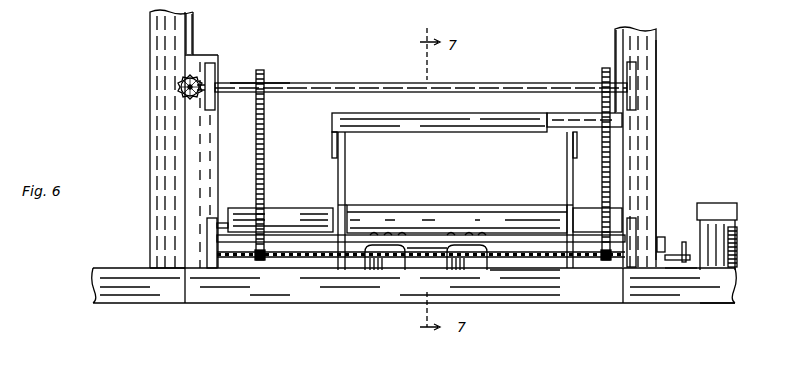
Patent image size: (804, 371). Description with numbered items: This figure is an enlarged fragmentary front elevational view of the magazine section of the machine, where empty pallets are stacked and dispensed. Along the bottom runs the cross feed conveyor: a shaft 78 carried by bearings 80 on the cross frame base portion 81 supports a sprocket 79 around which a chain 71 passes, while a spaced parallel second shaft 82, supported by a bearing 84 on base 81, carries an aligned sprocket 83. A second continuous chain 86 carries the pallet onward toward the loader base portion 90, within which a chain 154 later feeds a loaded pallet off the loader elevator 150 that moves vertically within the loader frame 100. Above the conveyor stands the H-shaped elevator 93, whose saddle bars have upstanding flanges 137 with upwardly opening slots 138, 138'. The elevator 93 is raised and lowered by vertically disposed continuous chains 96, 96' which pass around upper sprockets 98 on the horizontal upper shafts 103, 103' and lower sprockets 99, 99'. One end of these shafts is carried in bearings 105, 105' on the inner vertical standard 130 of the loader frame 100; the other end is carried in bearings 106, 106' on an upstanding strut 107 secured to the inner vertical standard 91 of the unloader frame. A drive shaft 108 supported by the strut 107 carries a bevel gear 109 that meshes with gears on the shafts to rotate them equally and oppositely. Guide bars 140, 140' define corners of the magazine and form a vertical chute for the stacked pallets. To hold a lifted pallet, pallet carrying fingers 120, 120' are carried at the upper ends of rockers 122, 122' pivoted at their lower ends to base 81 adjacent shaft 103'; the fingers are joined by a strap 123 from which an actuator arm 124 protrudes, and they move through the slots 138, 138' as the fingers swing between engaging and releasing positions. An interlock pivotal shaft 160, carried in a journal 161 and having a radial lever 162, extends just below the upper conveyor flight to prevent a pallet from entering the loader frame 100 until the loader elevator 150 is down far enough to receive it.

The inner vertical standard 91 is at (152, 23).
The guide bar 140 is at (212, 30).
The upstanding strut 107 is at (201, 61).
The bearing 106 is at (228, 81).
The drive shaft 108 is at (181, 78).
The bevel gear 109 is at (183, 96).
The sprocket 98 is at (265, 84).
The horizontal upper shaft 103 is at (421, 79).
The continuous chain 96 is at (274, 165).
The continuous chain 96' is at (625, 164).
The strap 123 is at (440, 133).
The actuator arm 124 is at (570, 114).
The pallet carrying finger 120 is at (317, 150).
The rocker 122 is at (359, 201).
The pallet carrying finger 120' is at (551, 145).
The rocker 122' is at (549, 200).
The inner vertical standard 130 is at (651, 34).
The guide bar 140' is at (599, 70).
The bearing 105 is at (657, 84).
The loader frame 100 is at (651, 106).
The bearing 106' is at (212, 255).
The sprocket 99 is at (280, 220).
The chain 71 is at (288, 259).
The elevator 93 is at (448, 205).
The upstanding flange 137 is at (514, 212).
The slot 138 is at (359, 197).
The slot 138' is at (551, 201).
The sprocket 79 is at (376, 231).
The shaft 78 is at (392, 230).
The horizontal upper shaft 103' is at (449, 224).
The second shaft 82 is at (476, 231).
The bearing 80 is at (393, 266).
The bearing 84 is at (467, 266).
The sprocket 83 is at (448, 252).
The continuous chain 86 is at (535, 261).
The sprocket 99' is at (597, 221).
The bearing 105' is at (649, 254).
The cross frame base portion 81 is at (272, 303).
The loader base portion 90 is at (683, 298).
The journal 161 is at (661, 237).
The pivotal shaft 160 is at (664, 246).
The lever 162 is at (735, 280).
The loader elevator 150 is at (737, 220).
The chain 154 is at (738, 254).